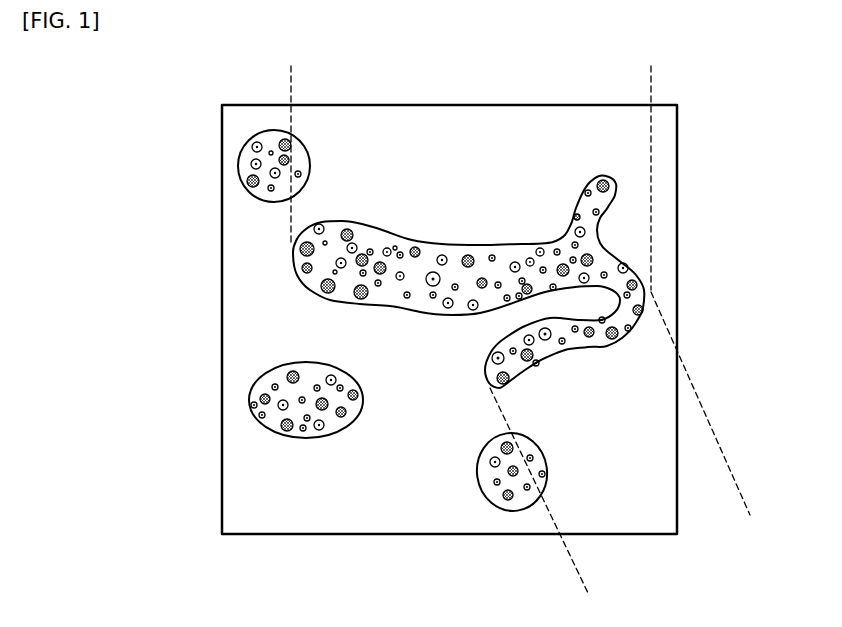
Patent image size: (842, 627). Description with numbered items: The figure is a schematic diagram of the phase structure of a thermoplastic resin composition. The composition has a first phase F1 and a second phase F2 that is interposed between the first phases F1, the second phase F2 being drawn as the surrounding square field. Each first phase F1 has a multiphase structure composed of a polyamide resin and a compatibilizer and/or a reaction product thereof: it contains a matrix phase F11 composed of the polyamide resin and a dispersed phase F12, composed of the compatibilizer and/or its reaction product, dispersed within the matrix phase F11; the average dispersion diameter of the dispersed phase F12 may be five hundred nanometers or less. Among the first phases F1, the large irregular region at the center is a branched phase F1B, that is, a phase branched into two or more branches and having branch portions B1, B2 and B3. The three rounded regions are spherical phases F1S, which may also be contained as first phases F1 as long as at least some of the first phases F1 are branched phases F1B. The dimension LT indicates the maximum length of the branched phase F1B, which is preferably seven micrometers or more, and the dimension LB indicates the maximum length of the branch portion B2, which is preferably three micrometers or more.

The first phase F1 is at (457, 330).
The spherical phase F1S is at (239, 133).
The branched phase F1B is at (616, 250).
The matrix phase F11 is at (243, 172).
The dispersed phase F12 is at (251, 188).
The second phase F2 is at (293, 523).
The branch portion B1 is at (385, 313).
The branch portion B2 is at (583, 352).
The branch portion B3 is at (577, 181).
The maximum length of branched phase LT is at (642, 80).
The maximum length of branch portion LB is at (744, 523).